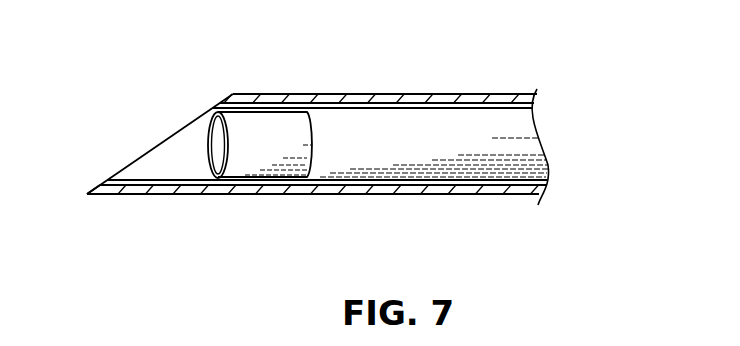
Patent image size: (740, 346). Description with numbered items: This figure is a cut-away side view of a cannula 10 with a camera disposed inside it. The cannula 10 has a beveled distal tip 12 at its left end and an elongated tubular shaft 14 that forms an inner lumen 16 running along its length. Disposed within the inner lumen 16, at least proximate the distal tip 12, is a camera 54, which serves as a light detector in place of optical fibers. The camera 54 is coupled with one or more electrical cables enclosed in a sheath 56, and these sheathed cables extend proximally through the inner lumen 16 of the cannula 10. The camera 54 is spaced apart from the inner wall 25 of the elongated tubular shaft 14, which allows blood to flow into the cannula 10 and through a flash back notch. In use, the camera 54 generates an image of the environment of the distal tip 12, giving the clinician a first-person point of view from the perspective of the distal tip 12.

The cannula 10 is at (118, 78).
The distal tip 12 is at (86, 196).
The elongated tubular shaft 14 is at (415, 94).
The inner lumen 16 is at (158, 177).
The inner wall 25 is at (392, 104).
The camera 54 is at (282, 127).
The sheath 56 is at (500, 117).